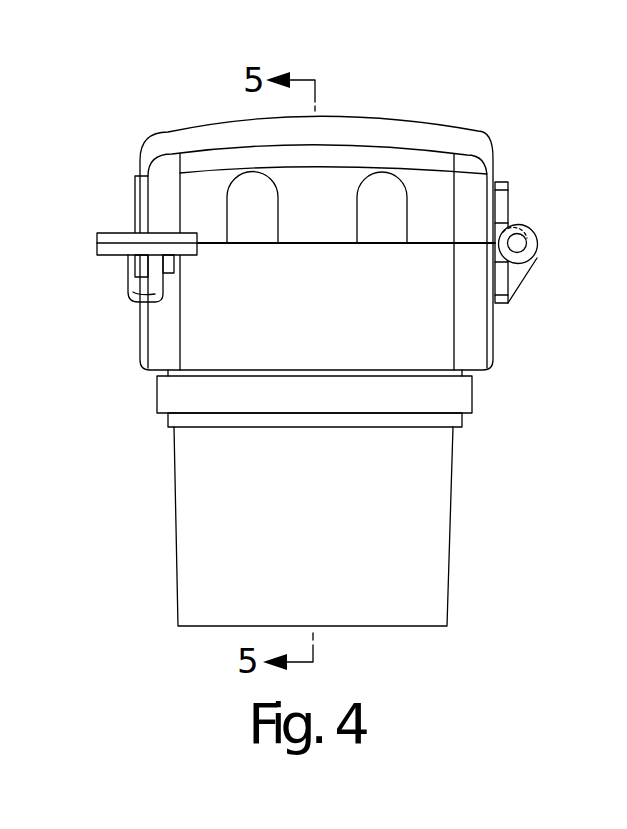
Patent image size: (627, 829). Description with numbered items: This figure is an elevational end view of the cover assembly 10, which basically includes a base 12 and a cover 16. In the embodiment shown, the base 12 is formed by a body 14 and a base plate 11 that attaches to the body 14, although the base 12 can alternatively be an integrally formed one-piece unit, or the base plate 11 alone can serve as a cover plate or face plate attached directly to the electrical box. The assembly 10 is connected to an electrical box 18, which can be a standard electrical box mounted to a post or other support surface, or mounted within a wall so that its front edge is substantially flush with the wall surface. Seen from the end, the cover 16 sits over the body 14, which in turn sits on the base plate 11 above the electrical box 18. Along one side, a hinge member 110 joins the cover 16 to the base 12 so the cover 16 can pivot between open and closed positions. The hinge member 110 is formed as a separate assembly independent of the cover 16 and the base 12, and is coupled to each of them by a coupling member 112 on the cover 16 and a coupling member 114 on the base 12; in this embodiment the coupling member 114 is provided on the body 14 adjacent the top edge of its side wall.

The cover assembly 10 is at (474, 84).
The base plate 11 is at (146, 410).
The base 12 is at (532, 422).
The body 14 is at (130, 349).
The cover 16 is at (384, 112).
The electrical box 18 is at (162, 559).
The hinge member 110 is at (546, 216).
The coupling member 112 is at (502, 180).
The coupling member 114 is at (508, 306).